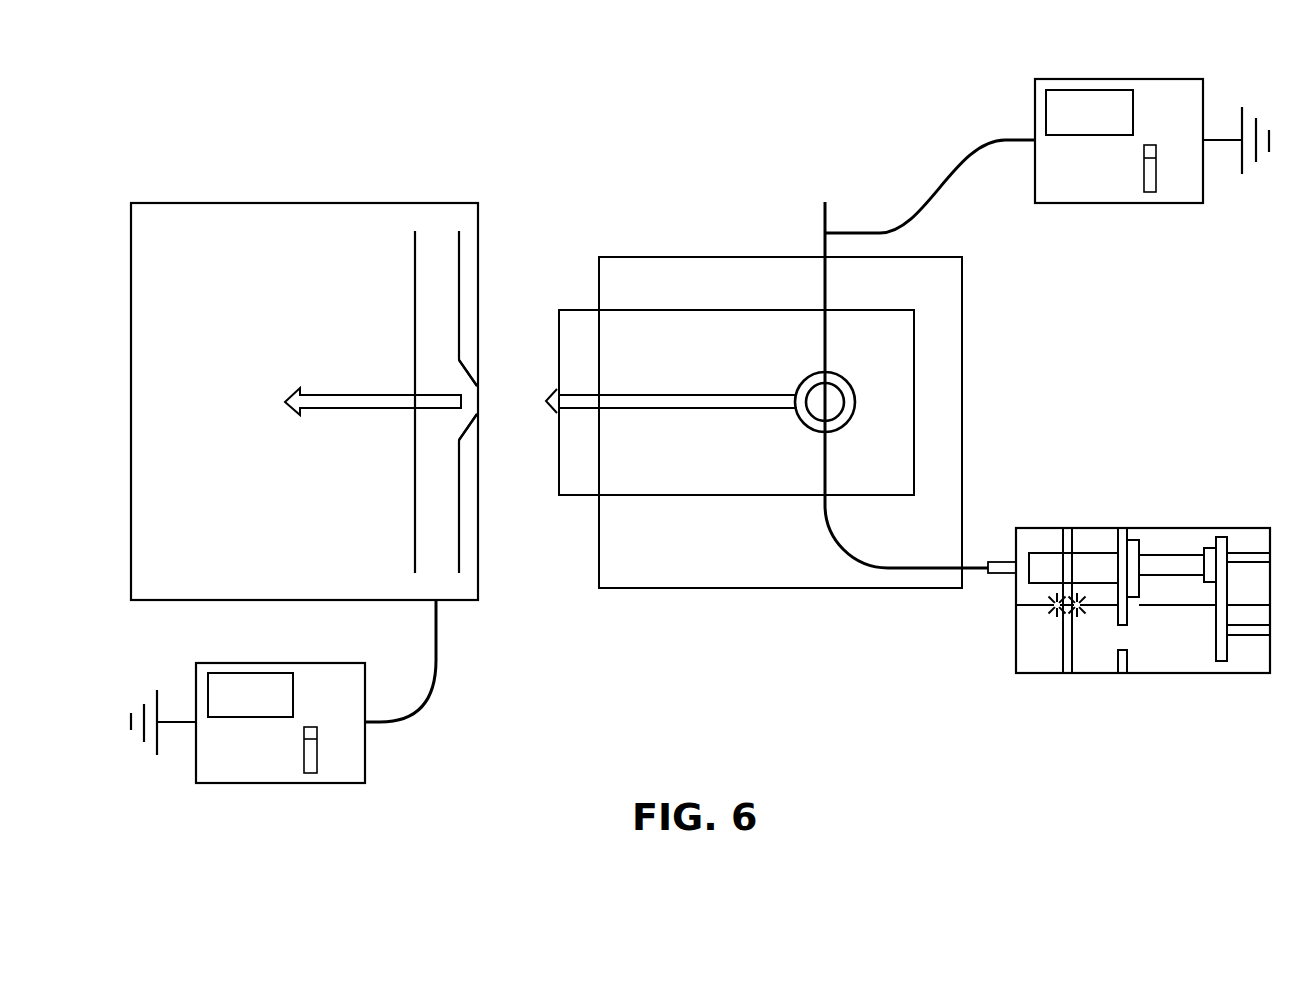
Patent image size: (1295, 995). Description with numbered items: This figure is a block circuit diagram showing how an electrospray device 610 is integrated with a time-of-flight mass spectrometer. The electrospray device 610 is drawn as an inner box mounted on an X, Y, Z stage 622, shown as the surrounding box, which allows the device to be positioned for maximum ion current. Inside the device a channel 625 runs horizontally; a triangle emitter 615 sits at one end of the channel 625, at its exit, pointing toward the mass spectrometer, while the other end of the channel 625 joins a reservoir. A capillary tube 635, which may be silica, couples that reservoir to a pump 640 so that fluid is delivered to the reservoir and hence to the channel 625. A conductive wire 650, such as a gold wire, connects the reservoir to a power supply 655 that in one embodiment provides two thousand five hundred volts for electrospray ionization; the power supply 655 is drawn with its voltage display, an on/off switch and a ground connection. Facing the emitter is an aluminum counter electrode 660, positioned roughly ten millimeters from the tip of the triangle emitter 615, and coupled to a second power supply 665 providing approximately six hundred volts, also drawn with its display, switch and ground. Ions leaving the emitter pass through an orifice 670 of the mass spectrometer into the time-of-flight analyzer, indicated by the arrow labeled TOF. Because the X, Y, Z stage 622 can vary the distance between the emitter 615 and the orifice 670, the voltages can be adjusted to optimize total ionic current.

The electrospray device 610 is at (736, 309).
The triangle emitter 615 is at (553, 394).
The X, Y, Z stage 622 is at (964, 424).
The channel 625 is at (650, 410).
The capillary tube 635 is at (843, 547).
The pump 640 is at (1144, 528).
The conductive wire 650 is at (828, 288).
The power supply 655 is at (1120, 78).
The aluminum counter electrode 660 is at (305, 197).
The power supply 665 is at (280, 661).
The orifice 670 is at (478, 408).